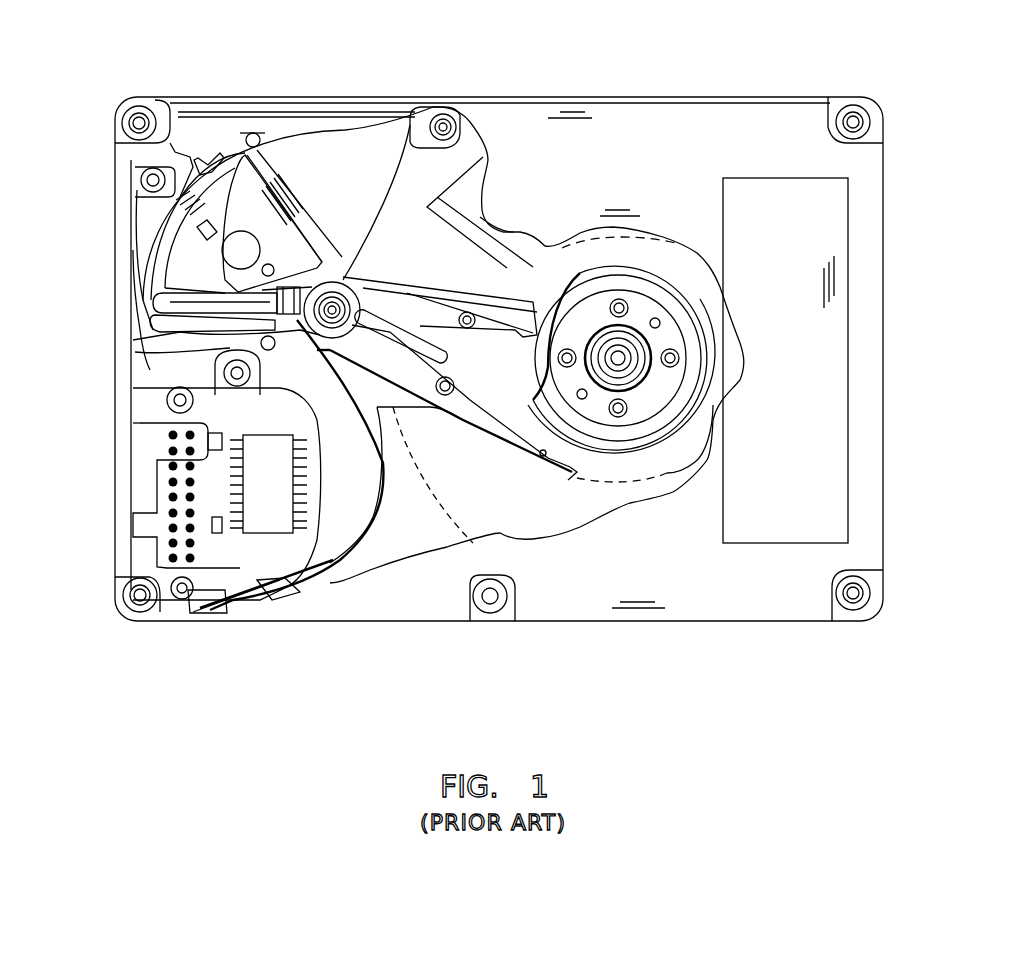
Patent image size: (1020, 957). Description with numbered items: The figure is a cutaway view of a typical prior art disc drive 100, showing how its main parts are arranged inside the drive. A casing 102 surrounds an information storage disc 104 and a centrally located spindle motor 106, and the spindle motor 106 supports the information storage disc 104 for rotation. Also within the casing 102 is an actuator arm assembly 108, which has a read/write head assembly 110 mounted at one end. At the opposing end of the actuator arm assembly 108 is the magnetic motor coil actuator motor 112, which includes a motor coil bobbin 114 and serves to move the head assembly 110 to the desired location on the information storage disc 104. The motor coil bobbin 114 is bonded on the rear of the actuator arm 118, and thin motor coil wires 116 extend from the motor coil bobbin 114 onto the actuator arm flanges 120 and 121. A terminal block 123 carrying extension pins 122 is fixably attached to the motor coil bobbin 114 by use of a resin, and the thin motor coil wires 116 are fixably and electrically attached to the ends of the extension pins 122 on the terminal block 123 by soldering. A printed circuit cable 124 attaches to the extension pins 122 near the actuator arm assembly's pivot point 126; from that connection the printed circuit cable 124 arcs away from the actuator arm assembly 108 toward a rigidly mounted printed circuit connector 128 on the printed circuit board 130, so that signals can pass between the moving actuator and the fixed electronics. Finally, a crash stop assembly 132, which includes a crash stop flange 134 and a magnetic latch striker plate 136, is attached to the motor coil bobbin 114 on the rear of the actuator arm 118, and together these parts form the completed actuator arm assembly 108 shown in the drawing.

The disc drive 100 is at (579, 68).
The casing 102 is at (258, 623).
The information storage disc 104 is at (470, 457).
The spindle motor 106 is at (647, 300).
The actuator arm assembly 108 is at (190, 262).
The read/write head assembly 110 is at (531, 440).
The magnetic motor coil actuator motor 112 is at (157, 287).
The motor coil bobbin 114 is at (177, 297).
The thin motor coil wires 116 is at (177, 347).
The actuator arm 118 is at (268, 158).
The actuator arm flange 120 is at (283, 182).
The actuator arm flange 121 is at (177, 327).
The extension pins 122 is at (305, 225).
The terminal block 123 is at (225, 143).
The printed circuit cable 124 is at (367, 567).
The pivot point 126 is at (334, 300).
The printed circuit connector 128 is at (222, 592).
The printed circuit board 130 is at (240, 568).
The crash stop assembly 132 is at (162, 232).
The crash stop flange 134 is at (143, 303).
The magnetic latch striker plate 136 is at (248, 120).